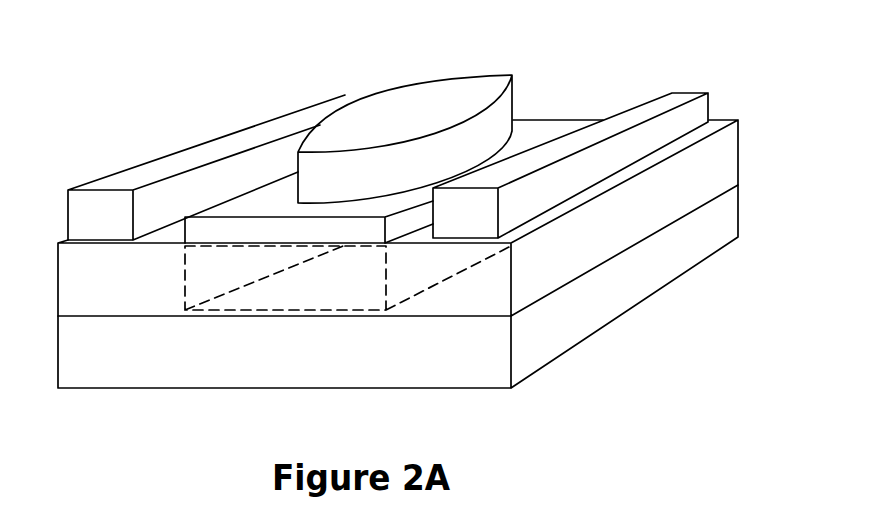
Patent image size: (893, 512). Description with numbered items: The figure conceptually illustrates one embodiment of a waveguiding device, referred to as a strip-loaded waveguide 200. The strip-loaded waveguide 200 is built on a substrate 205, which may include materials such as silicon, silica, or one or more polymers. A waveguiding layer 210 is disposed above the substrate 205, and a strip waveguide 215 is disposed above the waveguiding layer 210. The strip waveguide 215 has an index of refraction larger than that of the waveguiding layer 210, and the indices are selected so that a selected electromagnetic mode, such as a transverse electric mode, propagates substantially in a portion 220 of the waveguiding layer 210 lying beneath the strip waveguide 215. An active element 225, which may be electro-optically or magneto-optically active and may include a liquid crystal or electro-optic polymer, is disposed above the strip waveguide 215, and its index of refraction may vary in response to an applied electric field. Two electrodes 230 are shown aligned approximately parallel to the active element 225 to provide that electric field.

The strip-loaded waveguide 200 is at (258, 66).
The substrate 205 is at (738, 218).
The waveguiding layer 210 is at (738, 162).
The strip waveguide 215 is at (185, 237).
The portion of the waveguiding layer 220 is at (200, 288).
The active element 225 is at (515, 100).
The electrodes 230 is at (67, 212).